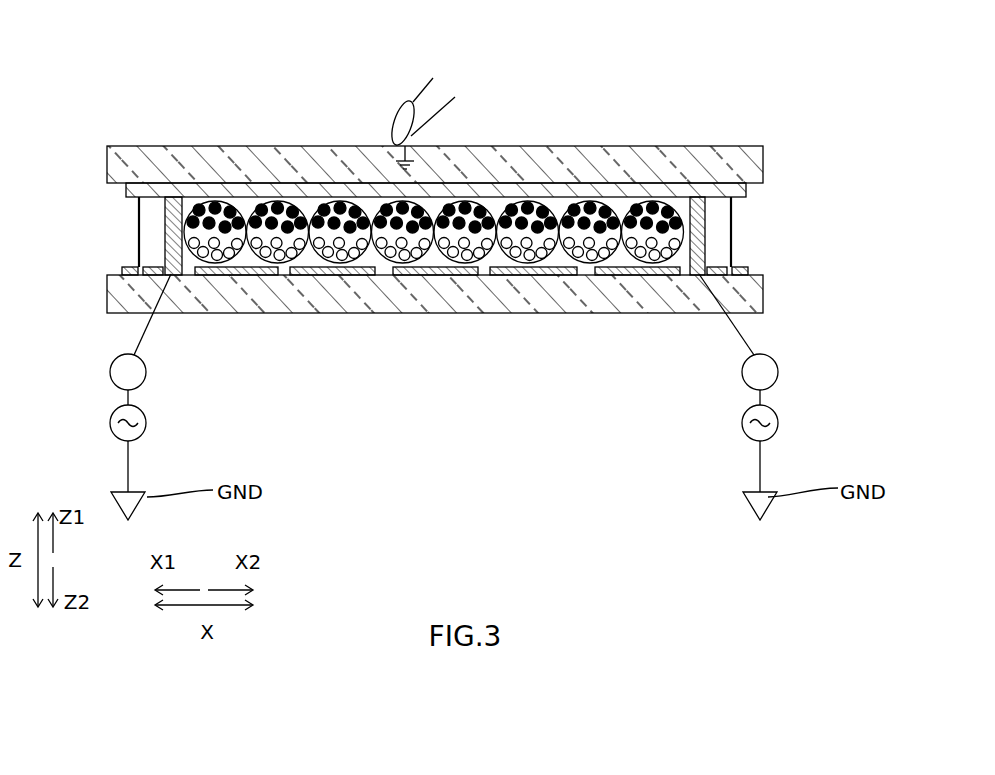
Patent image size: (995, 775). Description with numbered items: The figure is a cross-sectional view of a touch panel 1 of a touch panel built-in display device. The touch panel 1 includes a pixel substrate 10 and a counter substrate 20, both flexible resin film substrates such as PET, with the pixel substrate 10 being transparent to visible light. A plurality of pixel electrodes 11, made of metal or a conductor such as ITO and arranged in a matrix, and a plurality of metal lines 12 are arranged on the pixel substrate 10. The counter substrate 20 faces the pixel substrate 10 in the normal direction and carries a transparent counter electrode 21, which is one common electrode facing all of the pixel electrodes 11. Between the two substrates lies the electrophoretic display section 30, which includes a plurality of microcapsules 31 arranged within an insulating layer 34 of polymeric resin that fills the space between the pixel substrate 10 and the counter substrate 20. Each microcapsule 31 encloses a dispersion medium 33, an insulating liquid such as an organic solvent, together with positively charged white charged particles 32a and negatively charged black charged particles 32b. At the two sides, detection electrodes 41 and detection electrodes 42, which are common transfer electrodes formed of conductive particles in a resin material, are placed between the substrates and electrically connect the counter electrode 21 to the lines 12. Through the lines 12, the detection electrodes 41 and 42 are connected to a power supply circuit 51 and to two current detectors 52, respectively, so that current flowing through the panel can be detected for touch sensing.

The touch panel 1 is at (118, 33).
The pixel substrate 10 is at (470, 303).
The pixel electrodes 11 is at (258, 277).
The lines 12 is at (162, 267).
The counter substrate 20 is at (583, 167).
The counter electrode 21 is at (645, 187).
The electrophoretic display section 30 is at (345, 108).
The microcapsules 31 is at (184, 199).
The white charged particles 32a is at (215, 207).
The black charged particles 32b is at (238, 242).
The dispersion medium 33 is at (268, 226).
The insulating layer 34 is at (306, 207).
The detection electrodes 41 is at (170, 214).
The detection electrodes 42 is at (700, 233).
The power supply circuit 51 is at (147, 423).
The current detectors 52 is at (147, 372).